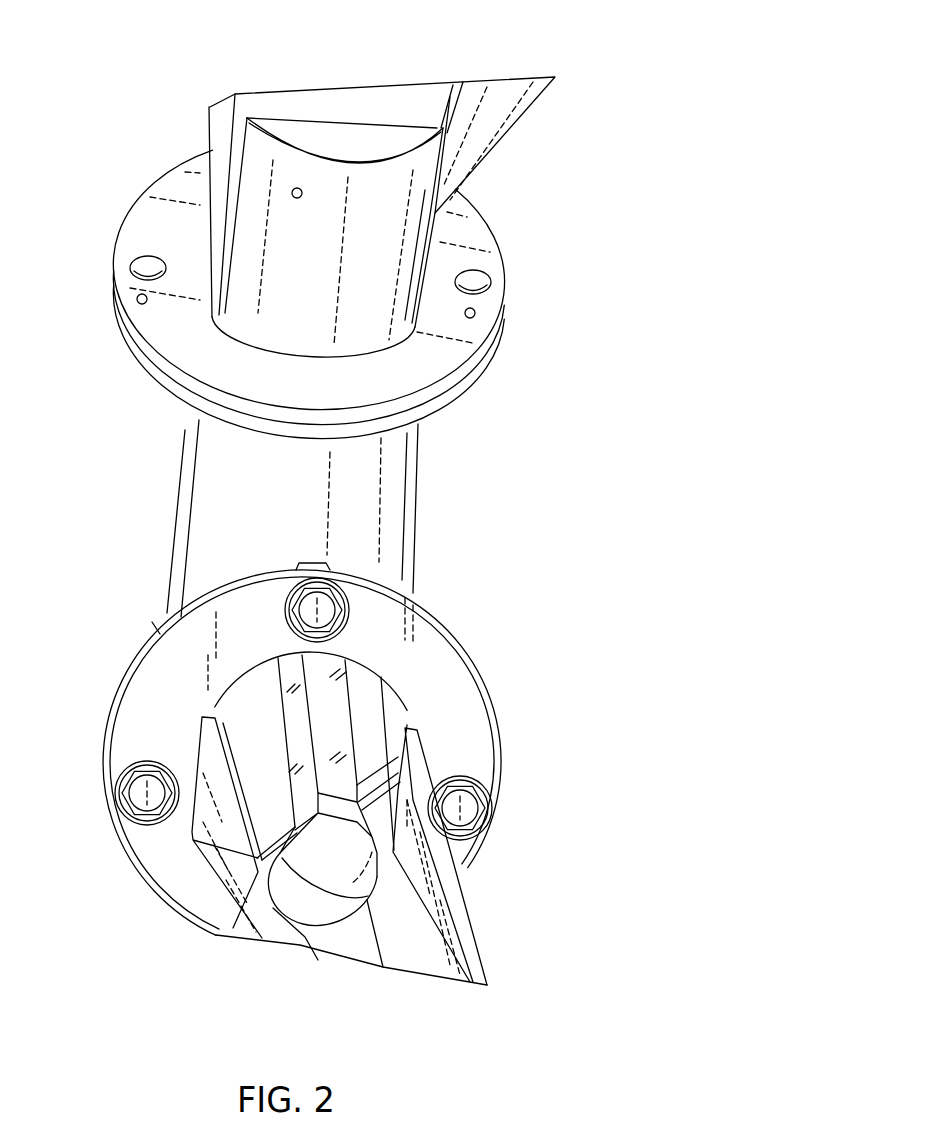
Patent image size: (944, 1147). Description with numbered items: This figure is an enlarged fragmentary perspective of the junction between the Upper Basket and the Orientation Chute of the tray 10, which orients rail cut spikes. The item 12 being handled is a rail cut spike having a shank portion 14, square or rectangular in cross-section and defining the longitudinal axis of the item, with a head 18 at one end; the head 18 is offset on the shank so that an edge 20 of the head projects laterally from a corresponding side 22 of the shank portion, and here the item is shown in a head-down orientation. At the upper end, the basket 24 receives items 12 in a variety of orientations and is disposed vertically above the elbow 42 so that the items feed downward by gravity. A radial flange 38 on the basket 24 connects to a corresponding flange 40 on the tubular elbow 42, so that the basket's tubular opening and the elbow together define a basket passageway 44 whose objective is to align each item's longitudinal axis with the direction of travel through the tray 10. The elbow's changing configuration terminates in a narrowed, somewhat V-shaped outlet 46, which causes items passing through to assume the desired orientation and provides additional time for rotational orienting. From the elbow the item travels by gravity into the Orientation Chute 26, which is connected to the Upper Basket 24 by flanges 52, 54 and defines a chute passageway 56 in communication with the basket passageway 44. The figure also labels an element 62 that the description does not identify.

The tray 10 is at (100, 208).
The item 12 is at (333, 743).
The shank portion 14 is at (327, 693).
The head 18 is at (347, 862).
The edge 20 is at (297, 912).
The side 22 is at (287, 757).
The Upper Basket 24 is at (548, 60).
The Orientation Chute 26 is at (386, 873).
The radial flange 38 is at (477, 249).
The flange 40 is at (460, 393).
The tubular elbow portion 42 is at (400, 493).
The basket passageway 44 is at (372, 133).
The outlet 46 is at (385, 930).
The flange 52 is at (157, 632).
The flange 54 is at (473, 695).
The chute passageway 56 is at (395, 960).
The bolt 62 is at (330, 605).